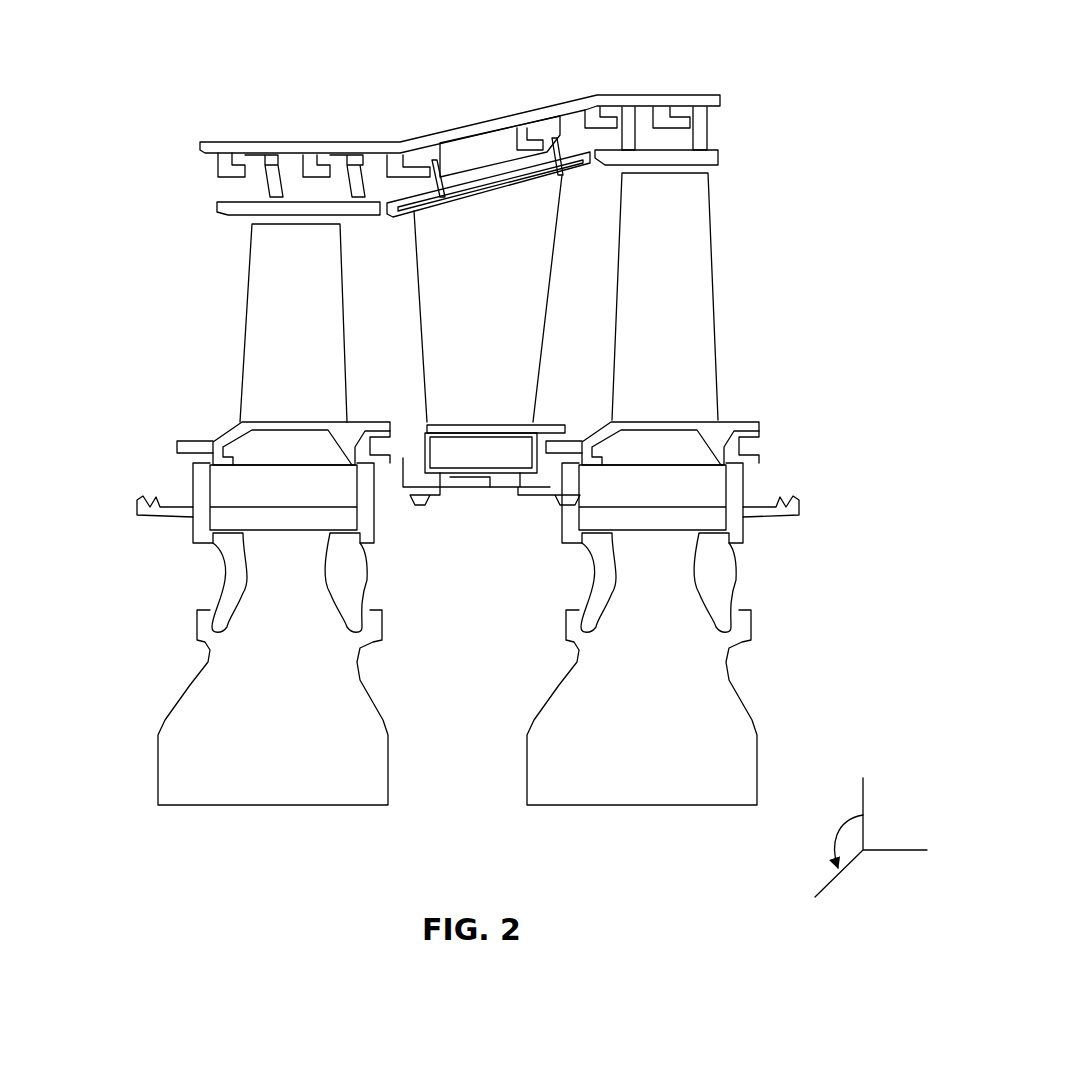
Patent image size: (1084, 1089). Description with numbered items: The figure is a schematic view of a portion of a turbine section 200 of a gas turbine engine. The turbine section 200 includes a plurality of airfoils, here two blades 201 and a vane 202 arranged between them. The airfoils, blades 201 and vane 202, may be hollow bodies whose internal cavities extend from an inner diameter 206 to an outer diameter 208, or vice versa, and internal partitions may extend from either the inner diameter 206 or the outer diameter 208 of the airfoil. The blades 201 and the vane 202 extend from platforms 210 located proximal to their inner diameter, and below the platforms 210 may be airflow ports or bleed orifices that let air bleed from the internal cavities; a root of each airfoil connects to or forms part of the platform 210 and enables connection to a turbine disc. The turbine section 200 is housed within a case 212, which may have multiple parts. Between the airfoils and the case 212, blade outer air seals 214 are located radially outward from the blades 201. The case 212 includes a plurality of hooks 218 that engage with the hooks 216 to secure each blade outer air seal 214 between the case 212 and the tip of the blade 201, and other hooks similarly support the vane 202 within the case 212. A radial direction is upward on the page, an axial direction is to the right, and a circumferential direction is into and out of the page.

The turbine section 200 is at (135, 98).
The blade 201 is at (320, 272).
The vane 202 is at (528, 250).
The inner diameter 206 is at (420, 404).
The outer diameter 208 is at (245, 238).
The platform 210 is at (553, 423).
The case 212 is at (478, 123).
The blade outer air seal 214 is at (285, 207).
The hook 216 is at (263, 162).
The hook 218 is at (220, 164).